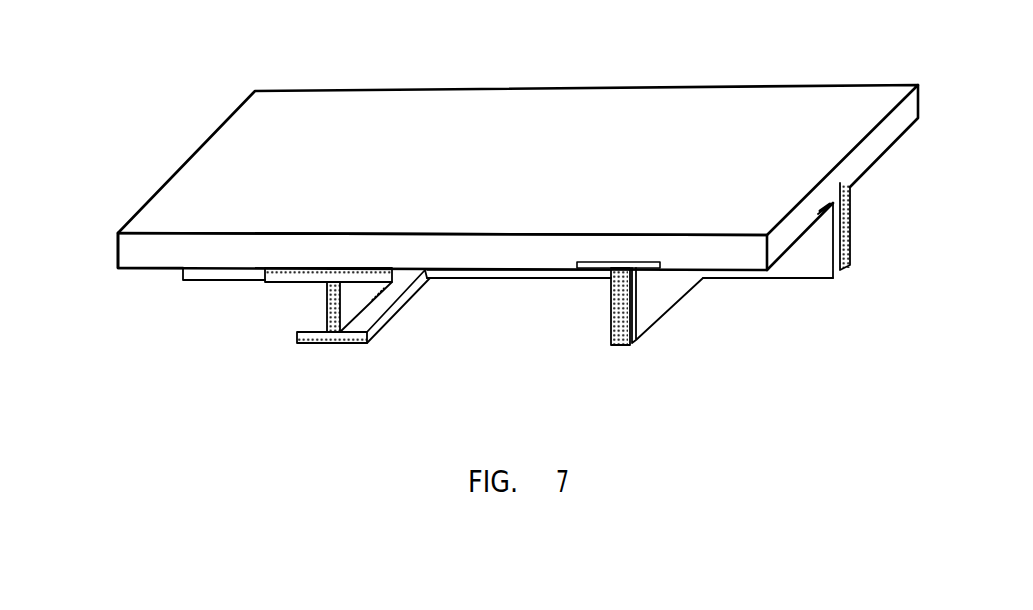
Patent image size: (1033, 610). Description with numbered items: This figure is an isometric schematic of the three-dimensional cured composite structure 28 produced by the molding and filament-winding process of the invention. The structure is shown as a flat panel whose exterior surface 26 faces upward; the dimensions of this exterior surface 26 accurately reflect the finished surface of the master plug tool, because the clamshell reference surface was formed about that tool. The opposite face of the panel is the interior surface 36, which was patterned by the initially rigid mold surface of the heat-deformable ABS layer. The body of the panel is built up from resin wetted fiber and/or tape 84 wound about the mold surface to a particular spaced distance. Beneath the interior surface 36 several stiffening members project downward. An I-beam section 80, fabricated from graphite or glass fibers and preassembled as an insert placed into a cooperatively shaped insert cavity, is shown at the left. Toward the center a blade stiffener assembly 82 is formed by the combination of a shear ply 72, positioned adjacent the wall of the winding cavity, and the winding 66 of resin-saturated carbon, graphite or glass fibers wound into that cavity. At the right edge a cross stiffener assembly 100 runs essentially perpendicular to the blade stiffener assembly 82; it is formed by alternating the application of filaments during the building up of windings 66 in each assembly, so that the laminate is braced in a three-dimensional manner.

The cured composite structure 28 is at (518, 145).
The exterior surface 26 is at (778, 112).
The resin wetted fiber and/or tape 84 is at (148, 247).
The I-beam section 80 is at (324, 294).
The shear ply 72 is at (611, 321).
The blade stiffener assembly 82 is at (642, 306).
The winding 66 is at (617, 345).
The interior surface 36 is at (857, 257).
The cross stiffener assembly 100 is at (854, 223).